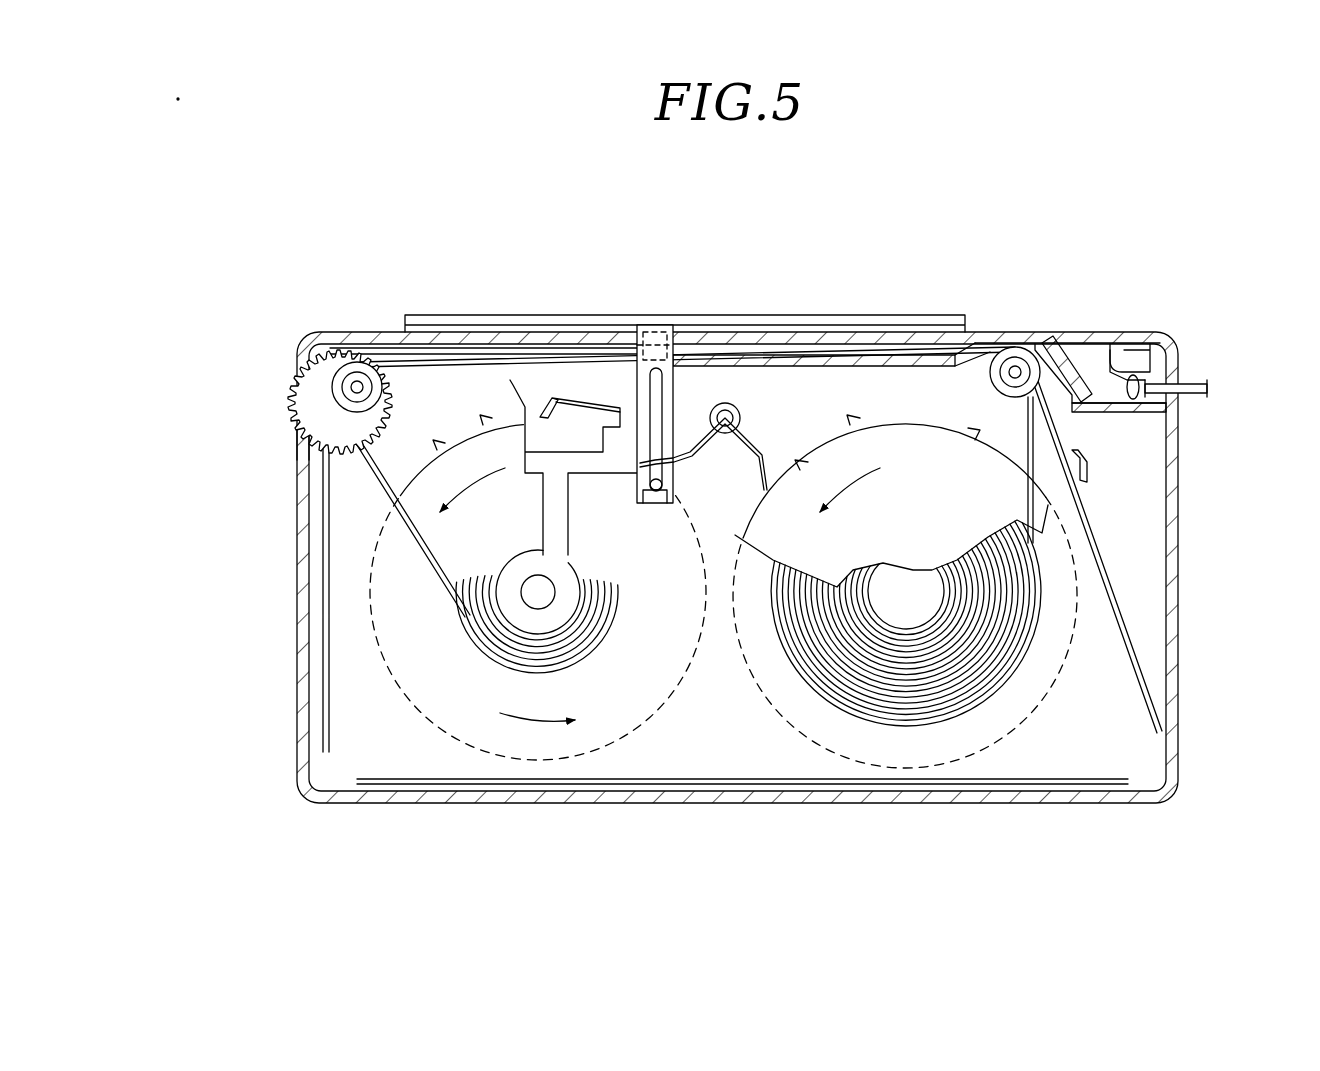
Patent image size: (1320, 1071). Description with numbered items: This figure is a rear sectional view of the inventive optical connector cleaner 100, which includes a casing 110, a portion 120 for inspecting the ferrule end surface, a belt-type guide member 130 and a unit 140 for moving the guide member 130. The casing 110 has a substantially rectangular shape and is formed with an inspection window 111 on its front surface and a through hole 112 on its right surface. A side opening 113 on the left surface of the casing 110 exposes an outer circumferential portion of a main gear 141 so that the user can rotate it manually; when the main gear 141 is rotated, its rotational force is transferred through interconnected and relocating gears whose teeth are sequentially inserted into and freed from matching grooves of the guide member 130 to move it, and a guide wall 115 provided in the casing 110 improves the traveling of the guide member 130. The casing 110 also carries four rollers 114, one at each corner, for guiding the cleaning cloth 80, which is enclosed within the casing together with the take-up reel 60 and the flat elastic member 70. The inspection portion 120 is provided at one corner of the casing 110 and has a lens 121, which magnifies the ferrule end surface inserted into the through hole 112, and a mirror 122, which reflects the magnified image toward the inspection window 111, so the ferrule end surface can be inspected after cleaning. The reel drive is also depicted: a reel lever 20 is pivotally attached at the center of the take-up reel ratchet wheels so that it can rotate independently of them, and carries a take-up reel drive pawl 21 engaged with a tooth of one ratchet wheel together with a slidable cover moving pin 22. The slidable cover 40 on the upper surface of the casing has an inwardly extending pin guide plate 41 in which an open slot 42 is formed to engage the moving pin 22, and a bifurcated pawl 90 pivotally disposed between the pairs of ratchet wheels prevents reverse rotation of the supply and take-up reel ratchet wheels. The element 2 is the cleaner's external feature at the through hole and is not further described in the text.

The tape (adhesive transfer tape) end 2 is at (1190, 384).
The reel lever 20 is at (512, 383).
The take-up reel drive pawl 21 is at (552, 398).
The slidable cover moving pin 22 is at (657, 492).
The slidable cover 40 is at (667, 328).
The pin guide plate 41 is at (645, 340).
The open slot 42 is at (660, 392).
The take-up reel 60 is at (468, 707).
The flat elastic member 70 is at (806, 355).
The cleaning cloth 80 is at (1037, 547).
The bifurcated pawl 90 is at (752, 442).
The optical connector cleaner 100 is at (970, 156).
The casing 110 is at (1178, 612).
The inspection window 111 is at (1042, 345).
The through hole 112 is at (1170, 398).
The side opening 113 is at (297, 430).
The rollers 114 is at (1008, 358).
The guide wall 115 is at (1088, 478).
The portion for inspecting the ferrule end surface 120 is at (1098, 355).
The lens 121 is at (1150, 350).
The mirror 122 is at (1085, 362).
The belt-type guide member 130 is at (325, 590).
The unit for moving the guide member 140 is at (277, 393).
The main gear 141 is at (287, 340).